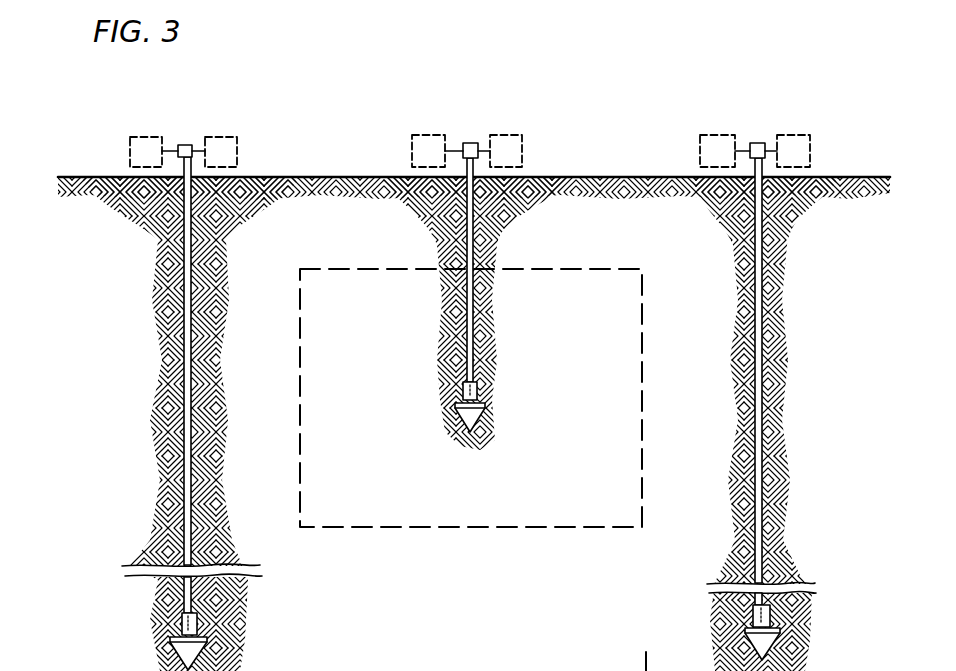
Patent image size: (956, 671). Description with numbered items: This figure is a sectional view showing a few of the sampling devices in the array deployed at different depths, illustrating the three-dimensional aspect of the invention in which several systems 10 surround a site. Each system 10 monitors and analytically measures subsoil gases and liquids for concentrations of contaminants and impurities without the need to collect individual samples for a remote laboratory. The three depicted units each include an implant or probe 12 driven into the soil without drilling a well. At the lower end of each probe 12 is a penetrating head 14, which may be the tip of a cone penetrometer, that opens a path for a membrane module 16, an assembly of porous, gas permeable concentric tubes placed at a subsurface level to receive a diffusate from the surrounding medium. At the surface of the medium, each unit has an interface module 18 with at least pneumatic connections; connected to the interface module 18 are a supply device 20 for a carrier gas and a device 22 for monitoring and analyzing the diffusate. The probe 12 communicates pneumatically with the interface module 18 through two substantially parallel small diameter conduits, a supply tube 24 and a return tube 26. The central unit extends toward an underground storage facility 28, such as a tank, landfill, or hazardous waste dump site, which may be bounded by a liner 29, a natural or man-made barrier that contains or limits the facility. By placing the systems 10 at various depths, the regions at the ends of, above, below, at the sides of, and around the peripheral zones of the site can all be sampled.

The system 10 is at (240, 125).
The probe 12 is at (197, 322).
The penetrating head 14 is at (200, 640).
The membrane module 16 is at (197, 617).
The interface module 18 is at (186, 145).
The supply device 20 is at (143, 137).
The monitoring and analyzing device 22 is at (216, 137).
The supply tube 24 is at (182, 408).
The return tube 26 is at (193, 382).
The underground storage facility 28 is at (590, 352).
The liner 29 is at (643, 313).